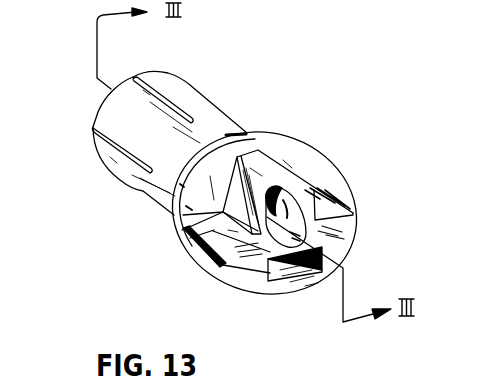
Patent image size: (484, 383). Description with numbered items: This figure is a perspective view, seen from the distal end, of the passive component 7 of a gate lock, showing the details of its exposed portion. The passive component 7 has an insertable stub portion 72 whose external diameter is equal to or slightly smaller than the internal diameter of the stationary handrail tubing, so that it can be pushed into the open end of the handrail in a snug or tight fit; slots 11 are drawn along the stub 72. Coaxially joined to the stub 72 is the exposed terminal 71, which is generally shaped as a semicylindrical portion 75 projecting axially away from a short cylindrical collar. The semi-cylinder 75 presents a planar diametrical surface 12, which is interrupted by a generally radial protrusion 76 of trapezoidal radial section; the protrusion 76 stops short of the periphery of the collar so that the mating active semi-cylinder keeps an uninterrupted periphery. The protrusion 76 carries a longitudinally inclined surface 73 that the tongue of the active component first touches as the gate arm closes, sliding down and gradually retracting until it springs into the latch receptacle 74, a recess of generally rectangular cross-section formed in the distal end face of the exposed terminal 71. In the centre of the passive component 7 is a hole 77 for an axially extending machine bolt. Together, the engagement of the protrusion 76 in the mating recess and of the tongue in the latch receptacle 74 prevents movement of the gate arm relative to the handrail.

The passive component 7 is at (243, 116).
The slots 11 is at (170, 103).
The planar diametrical surface 12 is at (335, 212).
The exposed terminal 71 is at (201, 246).
The insertable stub portion 72 is at (112, 108).
The longitudinally inclined surface 73 is at (255, 162).
The latch receptacle 74 is at (273, 270).
The semicylindrical portion 75 is at (346, 235).
The radial protrusion 76 is at (186, 237).
The hole 77 is at (291, 212).